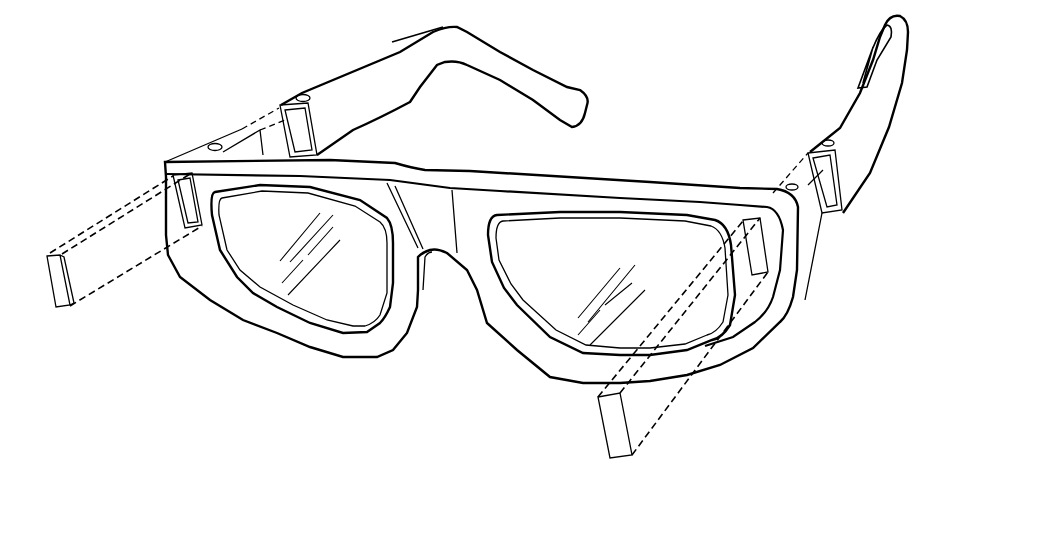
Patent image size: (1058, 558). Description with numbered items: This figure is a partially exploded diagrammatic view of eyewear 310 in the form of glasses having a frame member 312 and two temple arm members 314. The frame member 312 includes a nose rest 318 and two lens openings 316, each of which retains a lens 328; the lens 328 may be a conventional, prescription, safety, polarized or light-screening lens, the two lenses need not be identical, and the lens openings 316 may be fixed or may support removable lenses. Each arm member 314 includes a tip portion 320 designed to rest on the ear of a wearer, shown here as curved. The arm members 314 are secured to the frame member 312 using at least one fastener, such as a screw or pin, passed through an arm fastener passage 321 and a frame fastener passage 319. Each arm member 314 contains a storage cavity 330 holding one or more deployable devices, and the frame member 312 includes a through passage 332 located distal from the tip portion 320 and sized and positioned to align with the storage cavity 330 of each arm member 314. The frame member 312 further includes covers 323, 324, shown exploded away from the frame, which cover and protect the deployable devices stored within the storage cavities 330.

The eyewear 310 is at (113, 72).
The frame member 312 is at (271, 333).
The temple arm member 314 is at (363, 68).
The lens opening 316 is at (614, 197).
The nose rest 318 is at (423, 303).
The frame fastener passage 319 is at (220, 144).
The tip portion 320 is at (511, 92).
The arm fastener passage 321 is at (305, 96).
The cover 323 is at (600, 437).
The cover 324 is at (50, 303).
The lens 328 is at (280, 226).
The storage cavity 330 is at (357, 128).
The through passage 332 is at (172, 205).